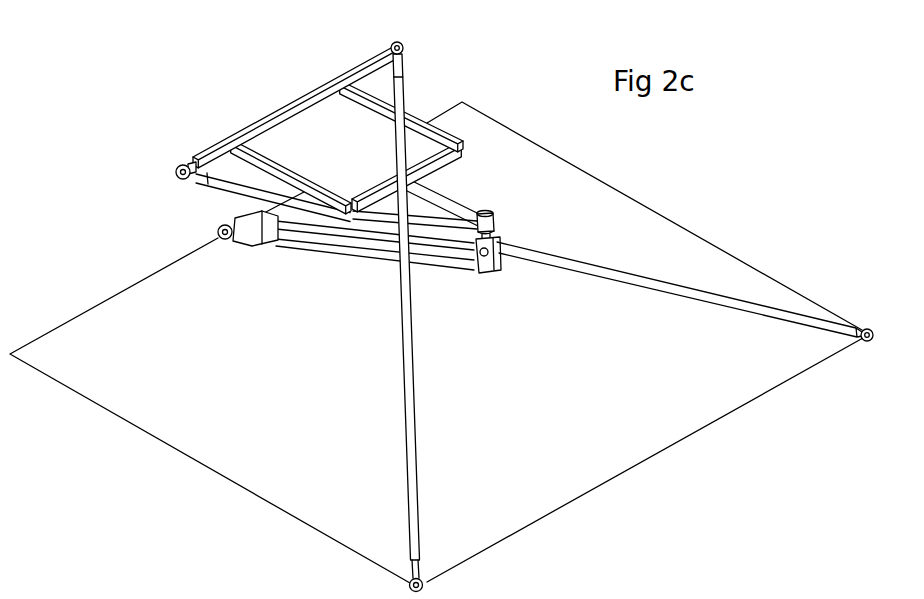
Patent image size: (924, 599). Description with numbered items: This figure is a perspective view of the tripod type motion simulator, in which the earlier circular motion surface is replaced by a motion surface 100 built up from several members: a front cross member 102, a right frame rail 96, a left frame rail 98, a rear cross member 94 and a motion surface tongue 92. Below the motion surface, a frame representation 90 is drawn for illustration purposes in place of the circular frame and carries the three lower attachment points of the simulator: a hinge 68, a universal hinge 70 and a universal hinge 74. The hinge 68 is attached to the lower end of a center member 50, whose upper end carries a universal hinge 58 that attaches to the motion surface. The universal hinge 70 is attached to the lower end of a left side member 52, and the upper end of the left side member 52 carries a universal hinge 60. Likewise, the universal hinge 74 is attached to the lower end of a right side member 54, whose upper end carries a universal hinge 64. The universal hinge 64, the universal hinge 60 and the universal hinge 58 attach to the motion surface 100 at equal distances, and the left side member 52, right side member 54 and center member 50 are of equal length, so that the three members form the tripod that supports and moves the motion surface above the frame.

The motion surface 100 is at (313, 117).
The front cross member 102 is at (297, 88).
The left frame rail 98 is at (303, 166).
The right frame rail 96 is at (420, 103).
The rear cross member 94 is at (467, 158).
The motion surface tongue 92 is at (470, 193).
The universal hinge 60 is at (175, 170).
The universal hinge 64 is at (404, 46).
The universal hinge 58 is at (505, 235).
The hinge 68 is at (213, 229).
The universal hinge 70 is at (863, 317).
The universal hinge 74 is at (432, 583).
The center member 50 is at (322, 255).
The left side member 52 is at (611, 262).
The right side member 54 is at (422, 432).
The frame representation 90 is at (738, 252).